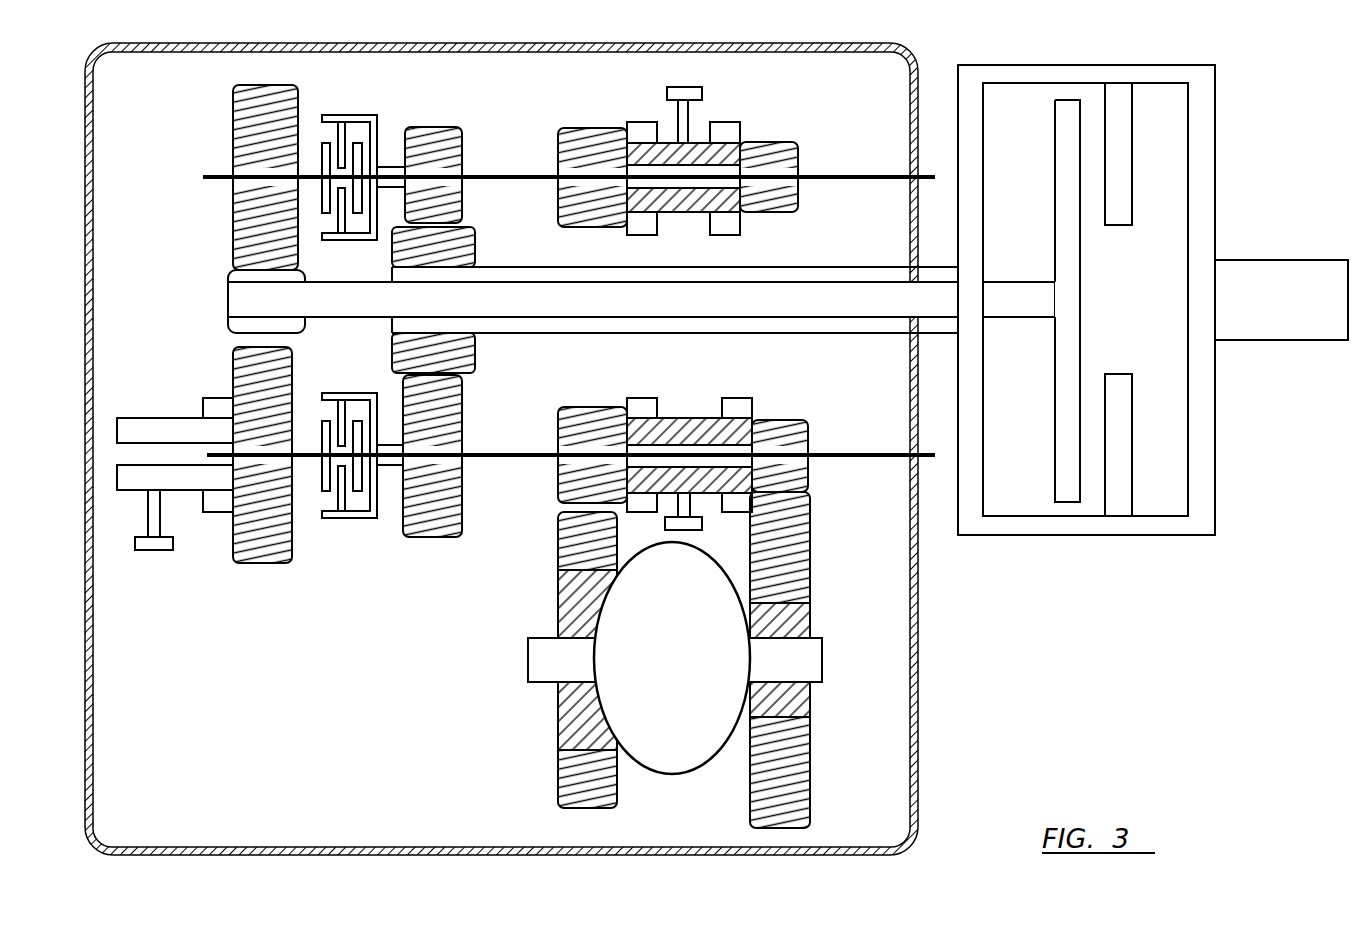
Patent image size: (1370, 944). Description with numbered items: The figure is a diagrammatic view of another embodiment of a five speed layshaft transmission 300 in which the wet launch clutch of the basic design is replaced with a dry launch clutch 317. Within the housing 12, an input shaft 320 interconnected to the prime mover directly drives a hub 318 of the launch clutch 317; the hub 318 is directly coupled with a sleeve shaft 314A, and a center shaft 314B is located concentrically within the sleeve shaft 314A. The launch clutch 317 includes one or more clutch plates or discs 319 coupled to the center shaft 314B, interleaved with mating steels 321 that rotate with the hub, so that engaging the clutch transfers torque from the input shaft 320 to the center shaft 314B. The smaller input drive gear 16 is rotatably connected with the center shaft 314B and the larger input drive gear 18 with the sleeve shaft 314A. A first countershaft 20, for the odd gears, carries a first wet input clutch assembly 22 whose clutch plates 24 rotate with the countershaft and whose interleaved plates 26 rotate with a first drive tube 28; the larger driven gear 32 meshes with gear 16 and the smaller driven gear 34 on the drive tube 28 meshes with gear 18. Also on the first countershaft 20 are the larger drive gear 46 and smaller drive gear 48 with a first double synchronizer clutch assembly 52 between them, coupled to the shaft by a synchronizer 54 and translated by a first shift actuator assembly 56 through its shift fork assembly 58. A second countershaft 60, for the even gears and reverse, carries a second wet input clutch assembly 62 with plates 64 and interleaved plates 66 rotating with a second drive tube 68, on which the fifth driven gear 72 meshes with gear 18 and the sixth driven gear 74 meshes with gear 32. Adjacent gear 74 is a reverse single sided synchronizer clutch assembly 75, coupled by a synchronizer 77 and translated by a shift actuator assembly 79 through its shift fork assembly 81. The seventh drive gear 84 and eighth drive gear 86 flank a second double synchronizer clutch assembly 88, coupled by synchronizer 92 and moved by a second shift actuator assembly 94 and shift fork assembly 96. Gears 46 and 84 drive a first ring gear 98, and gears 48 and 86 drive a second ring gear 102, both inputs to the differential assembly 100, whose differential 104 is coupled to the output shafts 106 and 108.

The housing 12 is at (915, 62).
The first, smaller input drive gear 16 is at (228, 278).
The second, larger input drive gear 18 is at (478, 242).
The first countershaft 20 is at (875, 177).
The first wet input clutch assembly 22 is at (372, 152).
The first plurality of clutch plates or discs 24 is at (364, 150).
The second plurality of clutch plates or discs 26 is at (338, 140).
The first quill or drive tube 28 is at (445, 165).
The first, larger driven gear 32 is at (233, 95).
The second, smaller driven gear 34 is at (445, 127).
The third, larger drive gear 46 is at (575, 128).
The fourth, smaller drive gear 48 is at (780, 142).
The first double synchronizer clutch assembly 52 is at (722, 147).
The first interengaging synchronizer 54 is at (718, 160).
The first shift actuator assembly 56 is at (661, 89).
The output member and shift fork assembly 58 is at (678, 120).
The second countershaft 60 is at (868, 457).
The second wet input clutch assembly 62 is at (350, 477).
The first plurality of clutch plates or discs 64 is at (324, 477).
The second plurality of clutch plates or discs 66 is at (368, 482).
The second quill or drive tube 68 is at (395, 440).
The fifth driven gear 72 is at (425, 540).
The sixth driven gear 74 is at (235, 548).
The reverse dog clutch or single sided synchronizer clutch assembly 75 is at (142, 501).
The synchronizer 77 is at (218, 448).
The shift actuator assembly 79 is at (165, 505).
The output member and shift fork assembly 81 is at (172, 523).
The seventh, larger drive gear 84 is at (585, 407).
The eighth, smaller drive gear 86 is at (785, 420).
The second double synchronizer clutch assembly 88 is at (680, 457).
The synchronizer 92 is at (690, 450).
The second shift actuator assembly 94 is at (714, 526).
The output member and shift fork assembly 96 is at (665, 525).
The first output or ring gear 98 is at (558, 713).
The differential assembly 100 is at (672, 686).
The second output or ring gear 102 is at (810, 705).
The differential 104 is at (660, 775).
The axle or output shaft 106 is at (528, 660).
The axle or output shaft 108 is at (822, 660).
The five speed layshaft transmission 300 is at (1153, 282).
The sleeve shaft 314A is at (815, 267).
The center shaft 314B is at (1012, 282).
The dry launch clutch 317 is at (1144, 282).
The hub 318 is at (1086, 65).
The clutch plates or discs 319 is at (1082, 262).
The input shaft 320 is at (1292, 258).
The mating steels 321 is at (1134, 210).